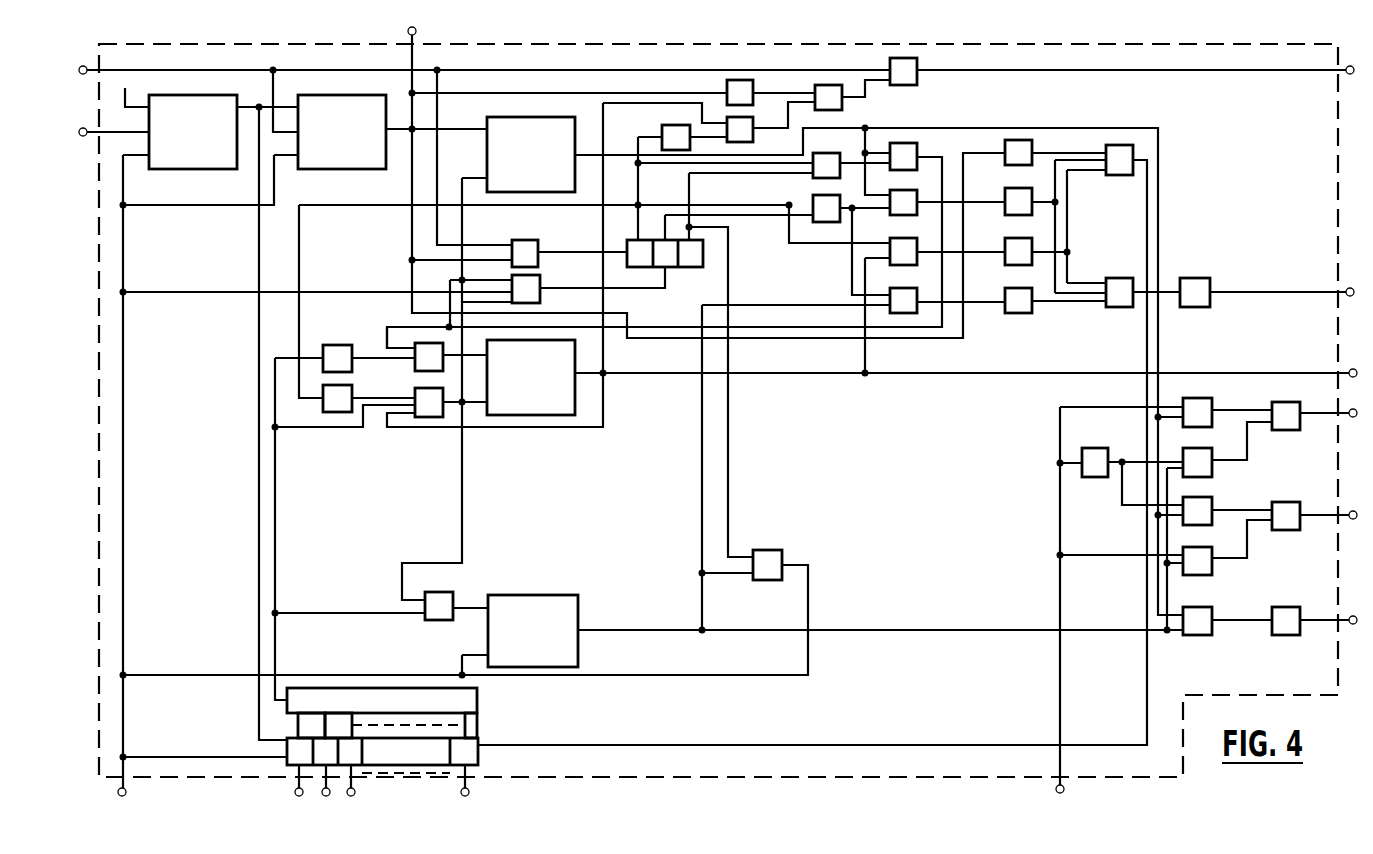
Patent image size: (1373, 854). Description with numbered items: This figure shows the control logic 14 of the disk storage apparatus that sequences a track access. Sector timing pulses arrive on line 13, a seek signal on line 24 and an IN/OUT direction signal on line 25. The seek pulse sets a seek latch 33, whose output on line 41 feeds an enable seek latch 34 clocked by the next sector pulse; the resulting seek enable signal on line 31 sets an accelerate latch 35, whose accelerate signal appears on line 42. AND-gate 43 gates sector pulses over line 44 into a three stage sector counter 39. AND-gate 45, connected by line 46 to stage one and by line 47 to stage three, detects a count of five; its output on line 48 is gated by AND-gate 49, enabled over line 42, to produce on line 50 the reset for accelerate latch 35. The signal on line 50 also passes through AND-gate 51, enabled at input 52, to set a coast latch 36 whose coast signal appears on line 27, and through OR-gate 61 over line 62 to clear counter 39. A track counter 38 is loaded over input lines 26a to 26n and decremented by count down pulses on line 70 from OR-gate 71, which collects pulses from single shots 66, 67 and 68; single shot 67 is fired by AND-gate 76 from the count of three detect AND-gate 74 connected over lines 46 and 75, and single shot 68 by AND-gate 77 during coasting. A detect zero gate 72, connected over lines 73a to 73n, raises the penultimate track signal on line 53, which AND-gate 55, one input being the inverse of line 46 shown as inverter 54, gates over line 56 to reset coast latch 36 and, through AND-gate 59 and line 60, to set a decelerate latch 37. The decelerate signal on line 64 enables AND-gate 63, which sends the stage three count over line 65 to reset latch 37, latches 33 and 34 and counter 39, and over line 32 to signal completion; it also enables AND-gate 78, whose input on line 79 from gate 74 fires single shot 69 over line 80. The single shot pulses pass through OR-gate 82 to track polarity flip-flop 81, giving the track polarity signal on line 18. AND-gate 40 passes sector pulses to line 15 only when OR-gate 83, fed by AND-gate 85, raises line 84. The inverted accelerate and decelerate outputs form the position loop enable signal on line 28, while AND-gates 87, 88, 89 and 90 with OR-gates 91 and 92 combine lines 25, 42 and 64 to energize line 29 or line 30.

The sector pulse line 13 is at (484, 60).
The control logic 14 is at (600, 40).
The demodulator gating pulse line 15 is at (1355, 56).
The track polarity signal line 18 is at (1355, 280).
The seek signal line 24 is at (113, 119).
The IN/OUT signal line 25 is at (1077, 605).
The track counter input line 26a is at (306, 787).
The track counter input line 26n is at (491, 787).
The coast latch output line 27 is at (605, 396).
The position loop enable signal line 28 is at (1274, 612).
The switch control line 29 is at (1356, 400).
The switch control line 30 is at (1356, 501).
The seek enable signal line 31 is at (962, 350).
The access completion line 32 is at (139, 798).
The seek latch 33 is at (205, 169).
The enable seek latch 34 is at (355, 169).
The accelerate latch 35 is at (487, 118).
The coast latch 36 is at (560, 415).
The decelerate latch 37 is at (555, 595).
The track counter 38 is at (300, 744).
The three stage sector counter 39 is at (700, 270).
The AND-gate 40 is at (917, 68).
The seek latch output line 41 is at (258, 106).
The accelerate signal line 42 is at (632, 136).
The AND-gate 43 is at (514, 240).
The AND-gate output line 44 is at (588, 256).
The AND-gate 45 is at (824, 156).
The stage one line 46 is at (636, 230).
The stage three line 47 is at (685, 194).
The AND-gate output line 48 is at (872, 172).
The AND-gate 49 is at (917, 150).
The acceleration reset line 50 is at (397, 322).
The AND-gate 51 is at (416, 370).
The AND-gate enable input 52 is at (383, 342).
The penultimate track signal line 53 is at (275, 500).
The inverter 54 is at (344, 343).
The AND-gate 55 is at (432, 428).
The coast latch reset line 56 is at (470, 426).
The AND-gate 59 is at (432, 626).
The AND-gate output line 60 is at (466, 606).
The OR-gate 61 is at (540, 296).
The counter clear line 62 is at (636, 290).
The AND-gate 63 is at (767, 582).
The decelerate signal line 64 is at (670, 614).
The decelerate reset line 65 is at (670, 660).
The single shot 66 is at (1010, 164).
The single shot 67 is at (1010, 216).
The single shot 68 is at (1010, 268).
The single shot 69 is at (1008, 318).
The count down line 70 is at (858, 726).
The OR-gate 71 is at (1128, 178).
The detect zero gate 72 is at (382, 700).
The counter stage line 73a is at (364, 725).
The counter stage line 73n is at (490, 725).
The AND-gate 74 is at (822, 196).
The stage two line 75 is at (772, 224).
The AND-gate 76 is at (898, 216).
The AND-gate 77 is at (910, 238).
The AND-gate 78 is at (905, 290).
The AND-gate input line 79 is at (852, 264).
The AND-gate output line 80 is at (979, 288).
The track polarity flip-flop 81 is at (1205, 274).
The OR-gate 82 is at (1132, 274).
The OR-gate 83 is at (842, 104).
The OR-gate output line 84 is at (878, 88).
The AND-gate 85 is at (753, 138).
The AND-gate 87 is at (1210, 400).
The AND-gate 88 is at (1210, 450).
The AND-gate 89 is at (1210, 500).
The AND-gate 90 is at (1210, 548).
The OR-gate 91 is at (1295, 432).
The OR-gate 92 is at (1300, 484).